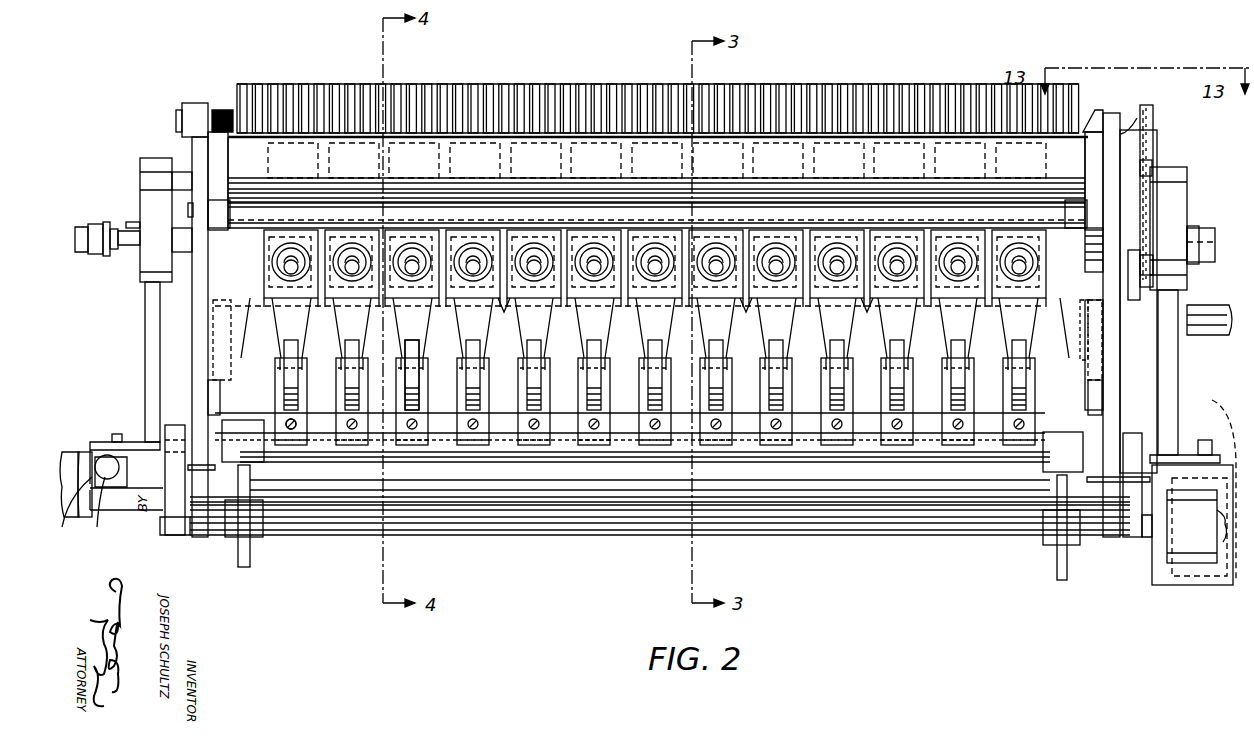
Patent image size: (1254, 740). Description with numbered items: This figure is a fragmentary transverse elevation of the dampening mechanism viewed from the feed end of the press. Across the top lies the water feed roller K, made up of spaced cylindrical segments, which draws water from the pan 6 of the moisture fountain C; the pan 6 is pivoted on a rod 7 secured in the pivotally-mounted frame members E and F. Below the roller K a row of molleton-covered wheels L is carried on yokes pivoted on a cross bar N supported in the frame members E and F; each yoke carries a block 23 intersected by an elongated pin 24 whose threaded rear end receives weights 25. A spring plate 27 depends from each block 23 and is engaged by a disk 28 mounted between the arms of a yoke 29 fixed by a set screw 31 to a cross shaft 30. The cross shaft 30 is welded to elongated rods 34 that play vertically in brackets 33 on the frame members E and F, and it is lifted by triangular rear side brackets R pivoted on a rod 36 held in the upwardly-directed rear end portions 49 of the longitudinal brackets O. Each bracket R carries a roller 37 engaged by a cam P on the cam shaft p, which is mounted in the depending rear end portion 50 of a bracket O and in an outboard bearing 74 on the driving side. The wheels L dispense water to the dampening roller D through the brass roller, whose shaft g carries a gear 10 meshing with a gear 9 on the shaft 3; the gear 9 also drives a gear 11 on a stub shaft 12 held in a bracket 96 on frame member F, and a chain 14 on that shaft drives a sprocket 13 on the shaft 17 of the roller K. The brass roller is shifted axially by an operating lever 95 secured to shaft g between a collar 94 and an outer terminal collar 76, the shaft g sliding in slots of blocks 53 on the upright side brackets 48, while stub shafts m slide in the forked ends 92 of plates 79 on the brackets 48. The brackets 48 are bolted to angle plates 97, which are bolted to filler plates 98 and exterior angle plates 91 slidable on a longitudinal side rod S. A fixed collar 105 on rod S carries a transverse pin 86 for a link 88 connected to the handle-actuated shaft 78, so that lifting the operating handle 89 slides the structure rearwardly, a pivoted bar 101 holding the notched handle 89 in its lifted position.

The water feed roller K is at (563, 84).
The moisture fountain C is at (890, 134).
The molleton-covered wheels L is at (267, 165).
The rod 7 is at (158, 190).
The cross bar N is at (231, 248).
The weights 25 is at (473, 328).
The elongated pin 24 is at (655, 328).
The block 23 is at (685, 328).
The spring plate 27 is at (280, 332).
The yoke 29 is at (418, 386).
The disk 28 is at (408, 374).
The cross shaft 30 is at (312, 416).
The set screw 31 is at (288, 422).
The rod 36 is at (418, 458).
The roller 37 is at (312, 486).
The dampening roller D is at (544, 510).
The cam shaft p is at (340, 524).
The rear side brackets R is at (264, 462).
The cam P is at (248, 561).
The frame member E is at (192, 356).
The water pan 6 is at (220, 114).
The plates 79 is at (172, 280).
The forked ends 92 is at (172, 174).
The stub shafts m is at (184, 162).
The upright side brackets 48 is at (146, 322).
The outer terminal collar 76 is at (84, 226).
The operating lever 95 is at (96, 256).
The collar 94 is at (108, 258).
The blocks 53 is at (128, 218).
The shaft g is at (128, 230).
The angle plates 97 is at (144, 442).
The filler plates 98 is at (118, 434).
The longitudinal side rod S is at (106, 454).
The bar 101 is at (86, 450).
The operating handle 89 is at (68, 452).
The transverse pins 86 is at (124, 470).
The links 88 is at (128, 481).
The fixed collars 105 is at (97, 527).
The exterior angle plates 91 is at (74, 550).
The handle-actuated shaft 78 is at (134, 526).
The rear end portions 49 is at (176, 426).
The rear end portion 50 is at (176, 538).
The longitudinal brackets O is at (212, 470).
The brackets 33 is at (220, 330).
The elongated rods 34 is at (228, 384).
The frame member F is at (1120, 368).
The shaft 17 is at (1136, 118).
The sprocket 13 is at (1154, 132).
The chain 14 is at (1156, 154).
The gear 11 is at (1150, 268).
The stub shaft 12 is at (1134, 272).
The gear 10 is at (1090, 262).
The gear 9 is at (1080, 312).
The bracket 96 is at (1098, 334).
The shaft 3 is at (1212, 334).
The outboard bearing 74 is at (1202, 563).